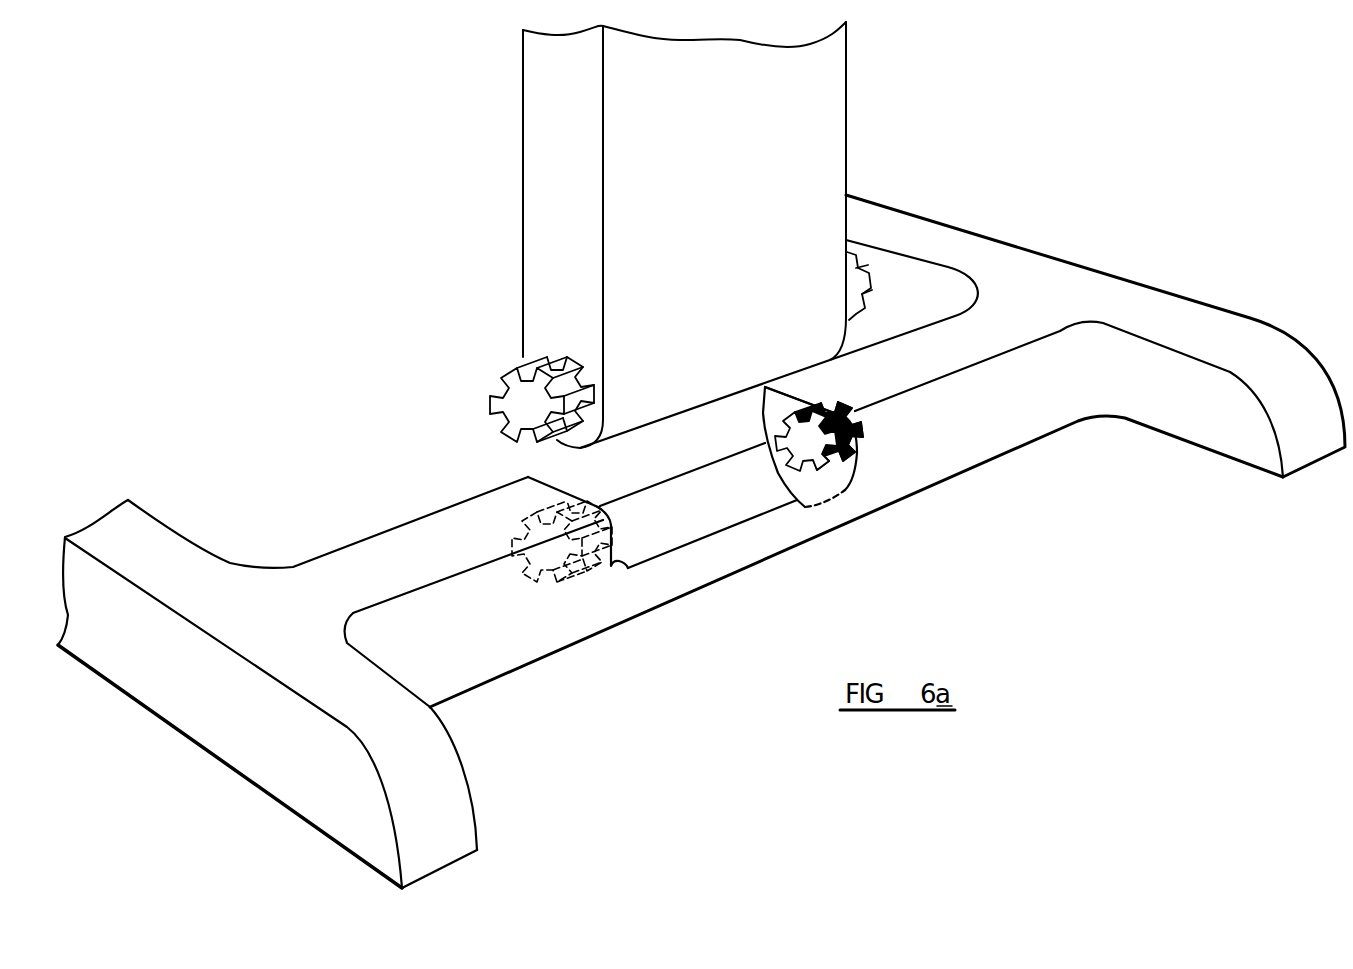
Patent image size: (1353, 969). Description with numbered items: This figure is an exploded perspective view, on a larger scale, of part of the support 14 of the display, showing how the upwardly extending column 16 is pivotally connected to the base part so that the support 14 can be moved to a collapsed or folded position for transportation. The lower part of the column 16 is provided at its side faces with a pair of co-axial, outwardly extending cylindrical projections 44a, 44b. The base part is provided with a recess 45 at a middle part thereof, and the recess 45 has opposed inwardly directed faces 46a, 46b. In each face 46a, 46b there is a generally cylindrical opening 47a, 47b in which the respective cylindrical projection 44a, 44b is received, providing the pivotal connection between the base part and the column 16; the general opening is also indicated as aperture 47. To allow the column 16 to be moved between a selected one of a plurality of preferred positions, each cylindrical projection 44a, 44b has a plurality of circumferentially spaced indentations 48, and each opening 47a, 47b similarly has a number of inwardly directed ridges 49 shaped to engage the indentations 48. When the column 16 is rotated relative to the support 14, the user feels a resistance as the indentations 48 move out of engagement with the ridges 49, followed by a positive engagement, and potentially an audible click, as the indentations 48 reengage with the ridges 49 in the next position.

The support 14 is at (701, 541).
The column 16 is at (540, 159).
The cylindrical projection 44a is at (493, 383).
The cylindrical projection 44b is at (867, 290).
The recess 45 is at (618, 492).
The inwardly directed face 46a is at (633, 580).
The inwardly directed face 46b is at (865, 498).
The shaft 47 is at (797, 472).
The cylindrical opening 47a is at (567, 580).
The cylindrical opening 47b is at (852, 455).
The indentations 48 is at (553, 350).
The ridges 49 is at (853, 415).